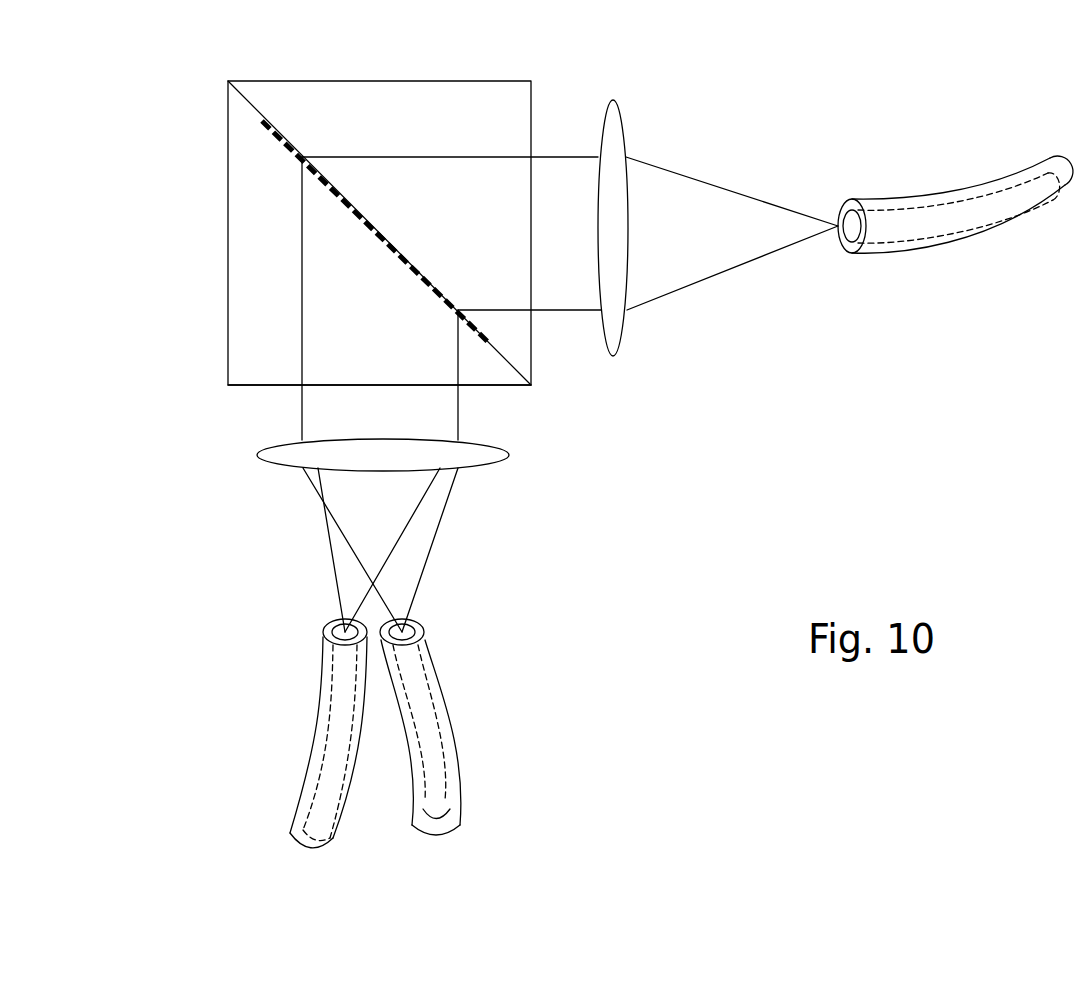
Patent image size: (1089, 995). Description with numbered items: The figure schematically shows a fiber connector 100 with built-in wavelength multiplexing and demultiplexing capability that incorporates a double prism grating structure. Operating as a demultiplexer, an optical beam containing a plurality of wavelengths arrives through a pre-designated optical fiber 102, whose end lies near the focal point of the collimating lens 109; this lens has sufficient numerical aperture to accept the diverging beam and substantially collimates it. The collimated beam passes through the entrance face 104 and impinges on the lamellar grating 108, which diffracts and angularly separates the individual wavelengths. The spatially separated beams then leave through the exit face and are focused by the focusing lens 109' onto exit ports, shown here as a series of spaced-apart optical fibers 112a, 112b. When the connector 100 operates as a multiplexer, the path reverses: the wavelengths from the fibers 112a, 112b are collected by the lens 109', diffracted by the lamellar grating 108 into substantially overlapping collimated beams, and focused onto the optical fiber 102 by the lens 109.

The fiber connector 100 is at (182, 269).
The optical fiber 102 is at (925, 200).
The entrance face 104 is at (532, 358).
The lamellar grating 108 is at (300, 155).
The collimating lens 109 is at (718, 217).
The focusing lens 109' is at (319, 535).
The optical fiber 112a is at (323, 683).
The optical fiber 112b is at (427, 707).